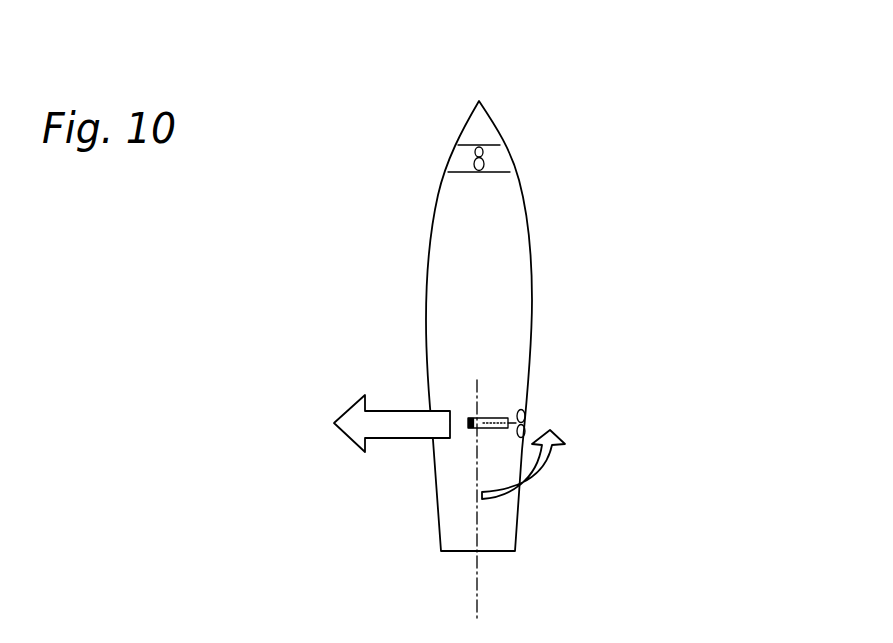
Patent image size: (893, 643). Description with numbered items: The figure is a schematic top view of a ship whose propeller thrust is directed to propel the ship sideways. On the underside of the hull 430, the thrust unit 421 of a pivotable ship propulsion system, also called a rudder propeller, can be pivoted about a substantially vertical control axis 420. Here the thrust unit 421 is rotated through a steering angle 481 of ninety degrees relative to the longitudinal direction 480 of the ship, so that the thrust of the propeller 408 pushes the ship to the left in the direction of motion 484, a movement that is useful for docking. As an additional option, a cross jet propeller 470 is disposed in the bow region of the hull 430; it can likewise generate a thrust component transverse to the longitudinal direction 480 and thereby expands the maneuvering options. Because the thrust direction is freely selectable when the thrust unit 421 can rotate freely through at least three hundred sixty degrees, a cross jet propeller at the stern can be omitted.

The direction of motion 484 is at (409, 428).
The control axis 420 is at (478, 423).
The cross jet propeller 470 is at (490, 161).
The hull 430 is at (532, 237).
The thrust unit 421 is at (500, 418).
The propeller 408 is at (526, 412).
The steering angle 481 is at (547, 468).
The longitudinal direction 480 is at (478, 571).